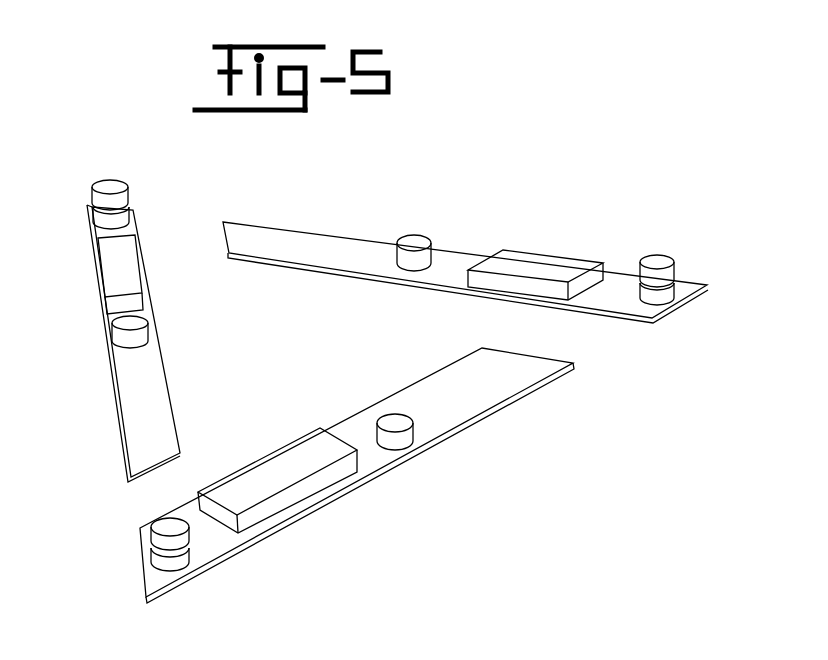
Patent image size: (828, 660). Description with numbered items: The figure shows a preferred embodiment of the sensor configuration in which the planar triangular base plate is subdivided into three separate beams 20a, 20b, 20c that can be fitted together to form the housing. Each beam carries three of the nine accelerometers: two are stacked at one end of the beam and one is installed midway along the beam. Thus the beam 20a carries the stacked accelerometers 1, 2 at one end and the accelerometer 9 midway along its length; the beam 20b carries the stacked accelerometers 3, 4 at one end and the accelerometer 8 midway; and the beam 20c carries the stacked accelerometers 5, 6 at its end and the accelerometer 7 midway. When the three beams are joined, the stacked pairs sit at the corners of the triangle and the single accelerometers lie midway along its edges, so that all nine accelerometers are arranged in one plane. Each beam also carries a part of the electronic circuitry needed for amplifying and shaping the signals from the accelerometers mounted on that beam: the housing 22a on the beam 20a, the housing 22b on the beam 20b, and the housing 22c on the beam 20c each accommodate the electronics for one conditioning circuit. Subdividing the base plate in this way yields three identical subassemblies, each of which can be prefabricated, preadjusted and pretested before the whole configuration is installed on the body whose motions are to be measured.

The beam 20a is at (487, 397).
The beam 20b is at (337, 250).
The beam 20c is at (148, 388).
The housing 22a is at (292, 498).
The housing 22b is at (533, 263).
The housing 22c is at (113, 268).
The accelerometer 1 is at (158, 563).
The accelerometer 2 is at (157, 523).
The accelerometer 3 is at (694, 287).
The accelerometer 4 is at (677, 270).
The accelerometer 5 is at (103, 224).
The accelerometer 6 is at (108, 193).
The accelerometer 7 is at (110, 343).
The accelerometer 8 is at (413, 242).
The accelerometer 9 is at (417, 440).